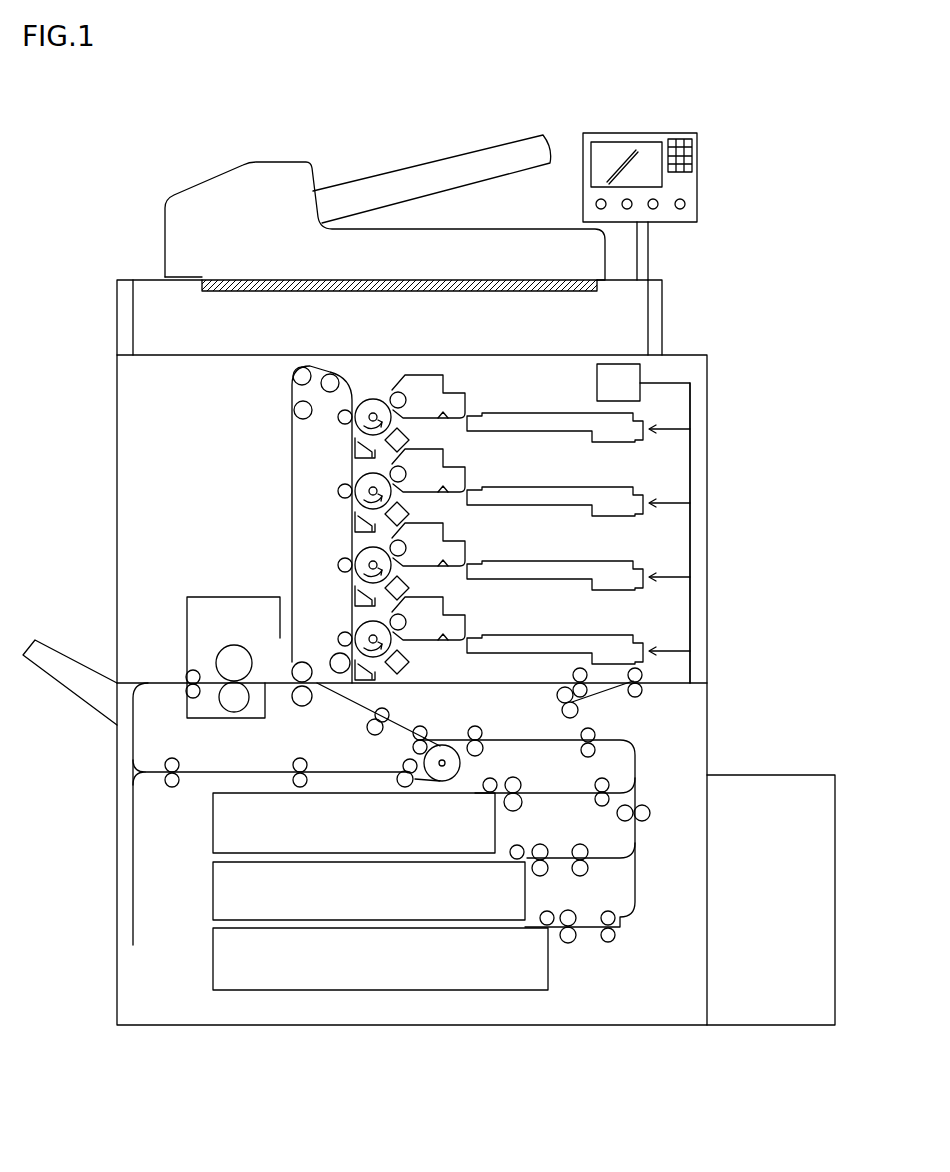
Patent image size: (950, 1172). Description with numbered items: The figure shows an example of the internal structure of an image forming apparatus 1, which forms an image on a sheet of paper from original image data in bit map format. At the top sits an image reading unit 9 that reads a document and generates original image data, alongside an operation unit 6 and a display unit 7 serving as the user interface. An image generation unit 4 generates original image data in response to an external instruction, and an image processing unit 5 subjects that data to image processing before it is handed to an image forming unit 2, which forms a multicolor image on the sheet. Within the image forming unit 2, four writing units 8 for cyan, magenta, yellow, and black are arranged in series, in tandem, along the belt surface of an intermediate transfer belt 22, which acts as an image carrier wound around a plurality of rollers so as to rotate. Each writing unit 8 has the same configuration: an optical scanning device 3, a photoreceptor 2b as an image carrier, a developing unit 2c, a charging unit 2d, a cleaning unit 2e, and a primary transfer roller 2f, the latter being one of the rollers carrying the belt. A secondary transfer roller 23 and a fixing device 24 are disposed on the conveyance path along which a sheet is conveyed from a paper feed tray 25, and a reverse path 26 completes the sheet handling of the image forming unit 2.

The image forming apparatus 1 is at (508, 95).
The image forming unit 2 is at (210, 490).
The photoreceptor 2b is at (372, 398).
The developing unit 2c is at (486, 412).
The charging unit 2d is at (408, 430).
The cleaning unit 2e is at (357, 452).
The primary transfer roller 2f is at (340, 422).
The optical scanning device 3 is at (548, 412).
The image generation unit 4 is at (745, 775).
The image processing unit 5 is at (618, 364).
The operation unit 6 is at (697, 178).
The display unit 7 is at (612, 150).
The writing unit 8 is at (660, 408).
The image reading unit 9 is at (150, 303).
The intermediate transfer belt 22 is at (292, 429).
The secondary transfer roller 23 is at (292, 681).
The fixing device 24 is at (237, 596).
The paper feed tray 25 is at (357, 1026).
The reverse path 26 is at (135, 858).